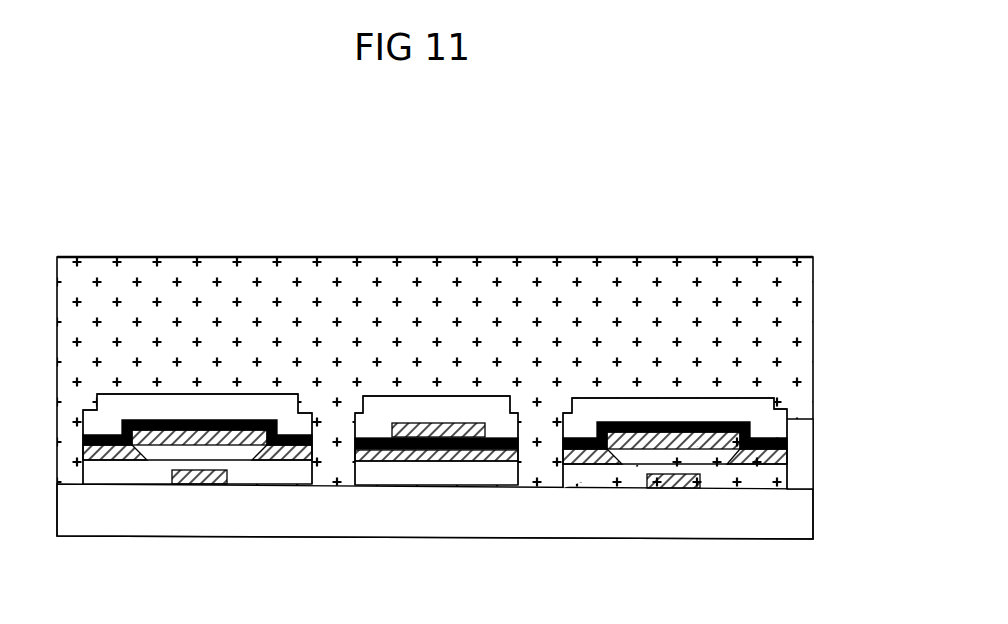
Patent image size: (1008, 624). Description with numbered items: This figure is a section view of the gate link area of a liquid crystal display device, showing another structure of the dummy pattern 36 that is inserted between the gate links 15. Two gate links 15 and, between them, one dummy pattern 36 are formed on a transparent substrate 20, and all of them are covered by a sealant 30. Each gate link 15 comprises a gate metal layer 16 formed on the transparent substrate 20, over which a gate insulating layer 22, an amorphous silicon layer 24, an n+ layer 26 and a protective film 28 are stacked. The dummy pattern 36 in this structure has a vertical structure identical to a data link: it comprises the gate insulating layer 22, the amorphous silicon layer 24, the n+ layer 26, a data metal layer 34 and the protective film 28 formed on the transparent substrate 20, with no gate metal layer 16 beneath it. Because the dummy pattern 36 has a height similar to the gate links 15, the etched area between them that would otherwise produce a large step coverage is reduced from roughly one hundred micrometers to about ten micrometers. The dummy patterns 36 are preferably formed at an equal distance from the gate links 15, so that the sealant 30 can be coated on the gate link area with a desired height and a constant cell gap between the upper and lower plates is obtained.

The gate link 15 is at (204, 388).
The gate metal layer 16 is at (677, 488).
The transparent substrate 20 is at (787, 523).
The gate insulating layer 22 is at (783, 478).
The amorphous silicon layer 24 is at (772, 456).
The n+ layer 26 is at (789, 444).
The protective film 28 is at (789, 419).
The sealant 30 is at (797, 307).
The data metal layer 34 is at (440, 462).
The dummy pattern 36 is at (436, 388).